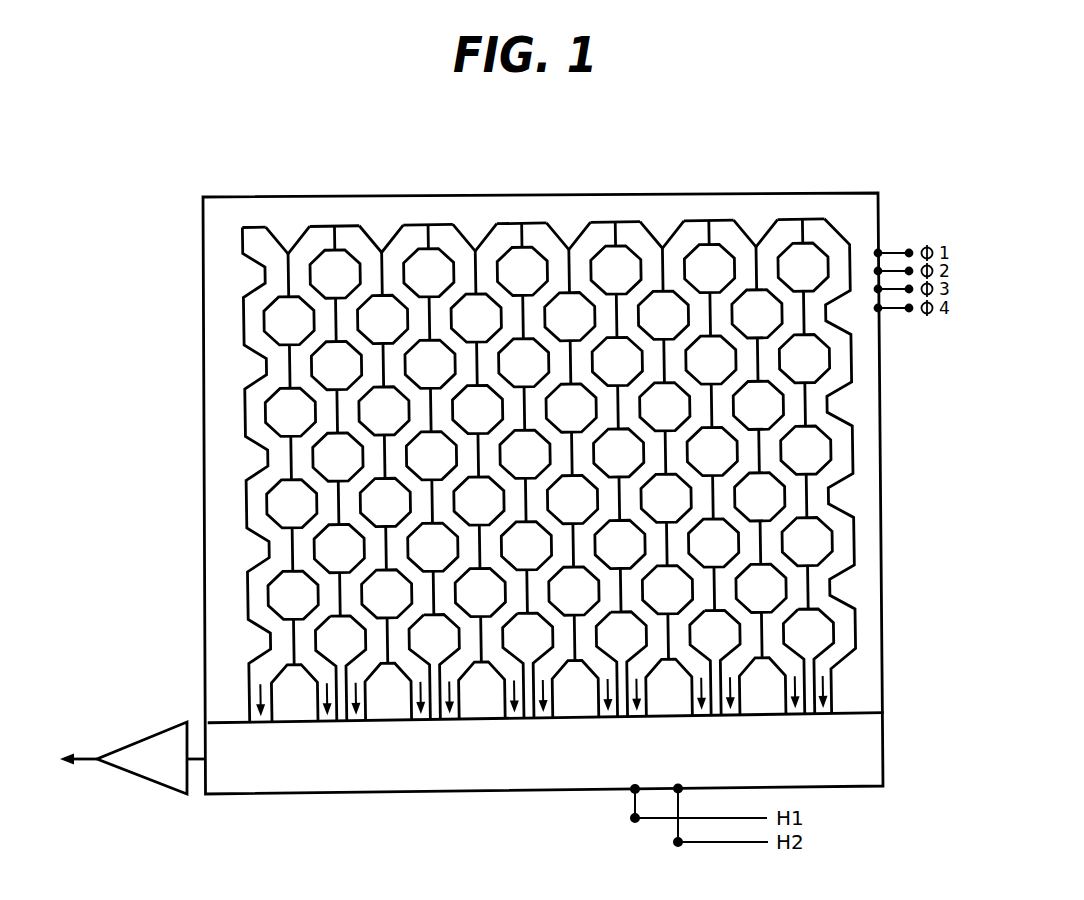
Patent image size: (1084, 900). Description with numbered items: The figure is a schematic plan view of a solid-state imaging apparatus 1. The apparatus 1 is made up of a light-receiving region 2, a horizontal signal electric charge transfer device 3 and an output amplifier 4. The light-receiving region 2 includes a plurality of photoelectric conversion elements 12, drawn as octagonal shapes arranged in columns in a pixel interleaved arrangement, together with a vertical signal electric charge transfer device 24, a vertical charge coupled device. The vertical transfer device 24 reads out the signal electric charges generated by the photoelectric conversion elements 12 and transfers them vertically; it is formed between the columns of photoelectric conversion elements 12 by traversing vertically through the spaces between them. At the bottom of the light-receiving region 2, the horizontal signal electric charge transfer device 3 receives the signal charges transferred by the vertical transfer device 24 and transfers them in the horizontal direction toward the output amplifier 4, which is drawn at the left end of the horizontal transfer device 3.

The solid-state imaging apparatus 1 is at (902, 785).
The light-receiving region 2 is at (213, 716).
The horizontal signal electric charge transfer device 3 is at (827, 778).
The output amplifier 4 is at (141, 766).
The photoelectric conversion element 12 is at (537, 249).
The vertical signal electric charge transfer device 24 is at (328, 223).